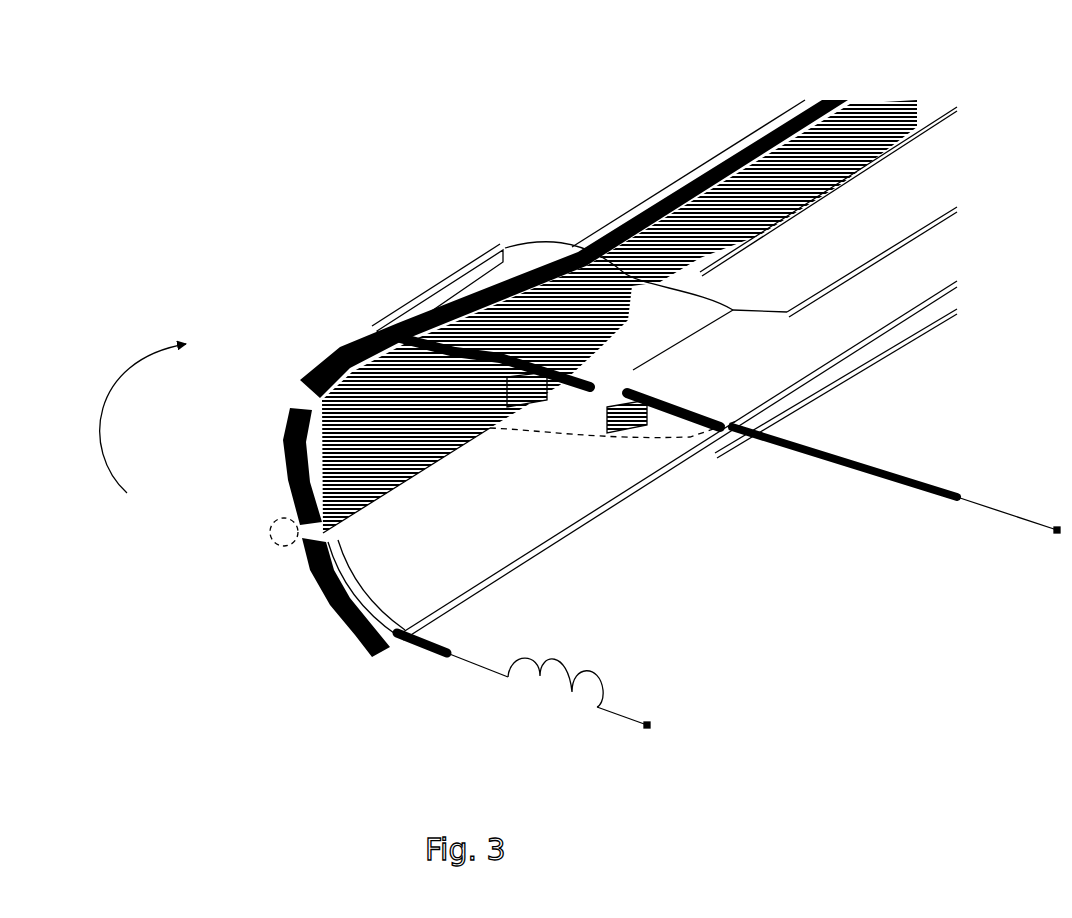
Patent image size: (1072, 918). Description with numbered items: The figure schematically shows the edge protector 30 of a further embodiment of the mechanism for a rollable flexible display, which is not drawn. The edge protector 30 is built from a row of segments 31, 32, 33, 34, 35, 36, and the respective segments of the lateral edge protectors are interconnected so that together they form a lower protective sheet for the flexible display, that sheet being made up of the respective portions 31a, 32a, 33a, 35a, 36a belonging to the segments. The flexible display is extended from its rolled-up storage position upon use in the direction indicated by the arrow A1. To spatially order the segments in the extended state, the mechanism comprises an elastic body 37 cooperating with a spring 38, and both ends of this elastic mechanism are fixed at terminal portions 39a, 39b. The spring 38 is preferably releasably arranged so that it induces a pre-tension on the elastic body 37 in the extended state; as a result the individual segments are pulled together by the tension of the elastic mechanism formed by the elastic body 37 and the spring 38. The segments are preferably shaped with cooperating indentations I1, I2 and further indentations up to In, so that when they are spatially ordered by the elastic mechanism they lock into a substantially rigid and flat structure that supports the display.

The edge protector 30 is at (268, 145).
The arrow A1 is at (88, 440).
The segment 31 is at (785, 358).
The portion 31a is at (797, 402).
The segment 32 is at (660, 278).
The portion 32a is at (913, 163).
The segment 33 is at (525, 260).
The portion 33a is at (785, 173).
The segment 34 is at (360, 340).
The segment 35 is at (290, 458).
The portion 35a is at (416, 462).
The segment 36 is at (327, 600).
The portion 36a is at (550, 523).
The elastic body 37 is at (892, 487).
The spring 38 is at (595, 673).
The terminal portion 39a is at (647, 725).
The terminal portion 39b is at (1057, 530).
The indentation I1 is at (602, 432).
The indentation I2 is at (498, 400).
The indentation In is at (272, 522).